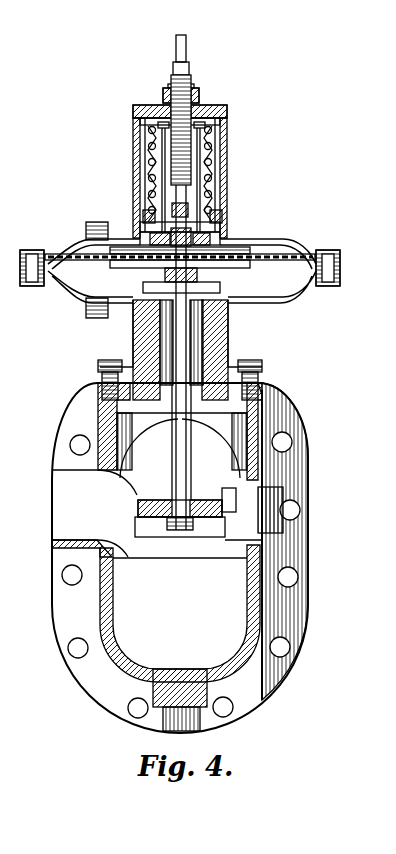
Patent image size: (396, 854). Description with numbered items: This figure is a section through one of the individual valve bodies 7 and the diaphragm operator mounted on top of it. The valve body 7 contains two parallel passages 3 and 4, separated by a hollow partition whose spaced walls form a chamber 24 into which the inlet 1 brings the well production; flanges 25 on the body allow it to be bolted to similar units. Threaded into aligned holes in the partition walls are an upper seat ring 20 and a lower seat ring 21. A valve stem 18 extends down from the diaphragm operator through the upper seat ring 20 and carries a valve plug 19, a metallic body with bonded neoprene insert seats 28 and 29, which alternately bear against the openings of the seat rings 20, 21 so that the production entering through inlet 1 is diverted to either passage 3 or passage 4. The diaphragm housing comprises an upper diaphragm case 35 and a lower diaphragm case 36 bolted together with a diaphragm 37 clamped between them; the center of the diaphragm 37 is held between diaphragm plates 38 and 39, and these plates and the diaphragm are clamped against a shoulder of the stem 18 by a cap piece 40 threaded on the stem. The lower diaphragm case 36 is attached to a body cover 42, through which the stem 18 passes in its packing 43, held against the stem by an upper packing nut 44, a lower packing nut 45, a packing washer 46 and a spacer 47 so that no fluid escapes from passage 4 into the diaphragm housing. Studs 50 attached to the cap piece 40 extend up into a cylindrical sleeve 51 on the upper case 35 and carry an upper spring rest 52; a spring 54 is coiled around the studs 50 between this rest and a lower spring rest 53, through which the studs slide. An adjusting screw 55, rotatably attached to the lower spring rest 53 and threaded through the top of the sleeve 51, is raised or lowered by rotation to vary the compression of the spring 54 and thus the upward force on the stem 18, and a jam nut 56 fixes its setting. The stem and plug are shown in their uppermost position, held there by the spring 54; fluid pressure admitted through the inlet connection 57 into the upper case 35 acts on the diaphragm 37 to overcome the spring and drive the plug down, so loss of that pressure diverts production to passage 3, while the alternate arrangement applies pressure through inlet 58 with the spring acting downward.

The inlet 1 is at (52, 546).
The passage 3 is at (236, 632).
The passage 4 is at (238, 430).
The valve body 7 is at (118, 658).
The valve stem 18 is at (173, 466).
The valve plug 19 is at (240, 492).
The upper seat ring 20 is at (228, 496).
The lower seat ring 21 is at (228, 556).
The chamber 24 is at (266, 536).
The flange 25 is at (306, 605).
The neoprene insert seat 28 is at (138, 507).
The neoprene insert seat 29 is at (136, 522).
The upper diaphragm case 35 is at (300, 260).
The lower diaphragm case 36 is at (298, 288).
The diaphragm 37 is at (288, 245).
The diaphragm plate 38 is at (252, 254).
The diaphragm plate 39 is at (212, 262).
The cap piece 40 is at (228, 233).
The body cover 42 is at (132, 332).
The packing 43 is at (232, 318).
The upper packing nut 44 is at (165, 286).
The lower packing nut 45 is at (194, 420).
The packing washer 46 is at (204, 336).
The spacer 47 is at (190, 352).
The studs 50 is at (148, 146).
The cylindrical sleeve 51 is at (226, 176).
The upper spring rest 52 is at (226, 120).
The lower spring rest 53 is at (143, 218).
The spring 54 is at (148, 172).
The adjusting screw 55 is at (190, 69).
The jam nut 56 is at (200, 96).
The inlet connection 57 is at (90, 226).
The inlet 58 is at (90, 315).